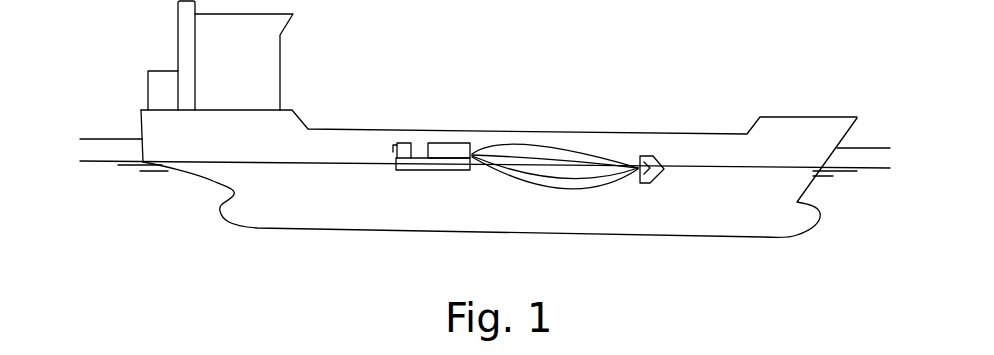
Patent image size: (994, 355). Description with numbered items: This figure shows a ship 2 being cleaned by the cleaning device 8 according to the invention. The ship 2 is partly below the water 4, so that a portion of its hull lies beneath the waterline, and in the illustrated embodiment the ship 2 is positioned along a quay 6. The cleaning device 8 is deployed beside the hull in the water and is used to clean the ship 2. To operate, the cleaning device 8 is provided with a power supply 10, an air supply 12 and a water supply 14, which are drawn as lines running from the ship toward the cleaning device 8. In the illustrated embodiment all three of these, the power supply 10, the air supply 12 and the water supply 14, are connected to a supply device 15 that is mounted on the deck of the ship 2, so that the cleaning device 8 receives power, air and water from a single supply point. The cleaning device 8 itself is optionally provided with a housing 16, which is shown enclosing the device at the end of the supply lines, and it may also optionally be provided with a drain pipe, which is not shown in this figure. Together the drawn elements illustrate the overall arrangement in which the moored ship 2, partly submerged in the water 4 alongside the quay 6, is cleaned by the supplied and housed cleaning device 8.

The ship 2 is at (797, 132).
The water 4 is at (870, 182).
The quay 6 is at (853, 157).
The cleaning device 8 is at (597, 159).
The power supply 10 is at (557, 145).
The air supply 12 is at (587, 175).
The water supply 14 is at (598, 182).
The supply device 15 is at (449, 152).
The housing 16 is at (649, 171).